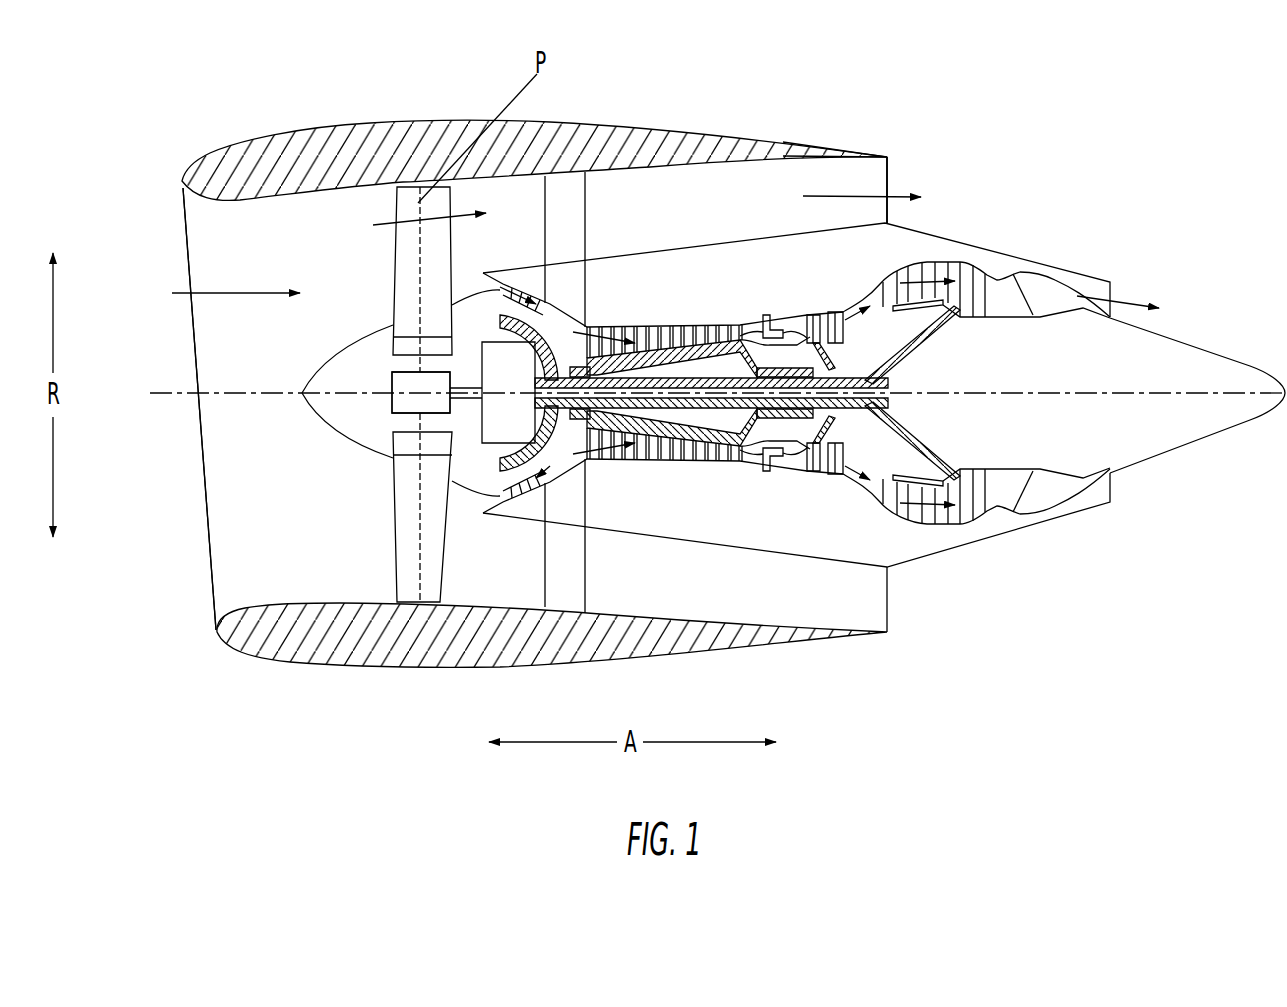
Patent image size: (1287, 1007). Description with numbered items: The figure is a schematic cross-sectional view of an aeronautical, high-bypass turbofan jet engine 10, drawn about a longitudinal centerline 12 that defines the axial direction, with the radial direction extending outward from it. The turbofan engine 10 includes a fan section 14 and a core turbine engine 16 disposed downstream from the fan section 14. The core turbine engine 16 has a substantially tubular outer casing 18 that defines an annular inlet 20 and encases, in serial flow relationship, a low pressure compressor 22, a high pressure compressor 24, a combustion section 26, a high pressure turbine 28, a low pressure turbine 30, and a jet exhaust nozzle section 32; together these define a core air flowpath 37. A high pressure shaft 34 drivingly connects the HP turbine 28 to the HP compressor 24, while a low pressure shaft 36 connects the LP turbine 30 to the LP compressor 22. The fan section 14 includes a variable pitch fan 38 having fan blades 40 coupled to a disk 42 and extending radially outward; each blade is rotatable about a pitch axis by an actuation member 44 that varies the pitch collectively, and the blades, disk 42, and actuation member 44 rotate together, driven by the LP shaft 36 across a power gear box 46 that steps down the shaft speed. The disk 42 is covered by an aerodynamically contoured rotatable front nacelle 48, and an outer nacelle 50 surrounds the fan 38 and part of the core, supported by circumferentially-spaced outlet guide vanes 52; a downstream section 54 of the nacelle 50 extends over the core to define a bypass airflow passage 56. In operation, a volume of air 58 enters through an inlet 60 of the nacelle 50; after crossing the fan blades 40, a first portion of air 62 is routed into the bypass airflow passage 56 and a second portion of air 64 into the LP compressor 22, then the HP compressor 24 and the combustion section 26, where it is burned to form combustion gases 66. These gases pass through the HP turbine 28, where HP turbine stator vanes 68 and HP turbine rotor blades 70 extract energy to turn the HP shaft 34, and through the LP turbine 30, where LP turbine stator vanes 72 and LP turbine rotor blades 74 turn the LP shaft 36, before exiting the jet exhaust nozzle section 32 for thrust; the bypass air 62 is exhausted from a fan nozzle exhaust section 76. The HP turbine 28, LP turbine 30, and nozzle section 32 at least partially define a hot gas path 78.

The turbofan jet engine 10 is at (1030, 133).
The longitudinal centerline 12 is at (1050, 393).
The fan section 14 is at (436, 90).
The core turbine engine 16 is at (760, 283).
The outer casing 18 is at (743, 562).
The annular inlet 20 is at (496, 498).
The low pressure compressor 22 is at (593, 467).
The high pressure compressor 24 is at (613, 450).
The combustion section 26 is at (784, 459).
The high pressure turbine 28 is at (898, 428).
The low pressure turbine 30 is at (976, 448).
The jet exhaust nozzle section 32 is at (1030, 505).
The high pressure shaft 34 is at (790, 355).
The low pressure shaft 36 is at (920, 353).
The core air flowpath 37 is at (857, 482).
The variable pitch fan 38 is at (308, 394).
The fan blades 40 is at (395, 543).
The disk 42 is at (417, 347).
The actuation member 44 is at (392, 378).
The power gear box 46 is at (525, 367).
The rotatable front nacelle 48 is at (302, 397).
The outer nacelle 50 is at (437, 670).
The outlet guide vanes 52 is at (585, 203).
The downstream section of nacelle 54 is at (810, 145).
The bypass airflow passage 56 is at (708, 222).
The volume of air 58 is at (237, 287).
The inlet 60 is at (212, 610).
The first portion of air 62 is at (427, 215).
The second portion of air 64 is at (483, 275).
The combustion gases 66 is at (927, 260).
The HP turbine stator vanes 68 is at (803, 470).
The HP turbine rotor blades 70 is at (863, 428).
The LP turbine stator vanes 72 is at (900, 507).
The LP turbine rotor blades 74 is at (905, 512).
The fan nozzle exhaust section 76 is at (873, 180).
The hot gas path 78 is at (875, 291).